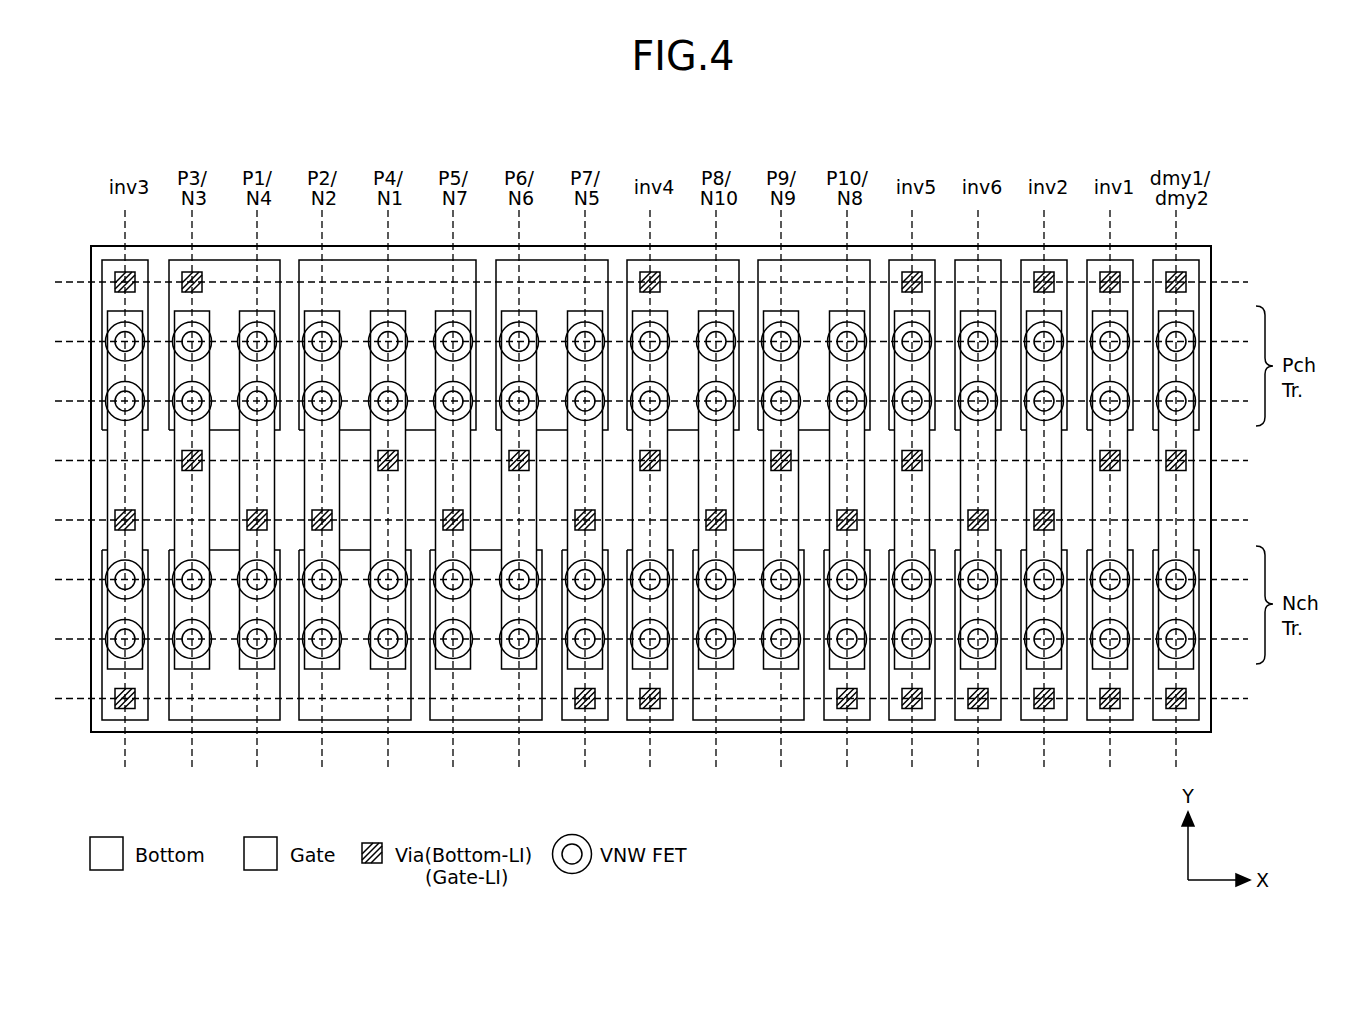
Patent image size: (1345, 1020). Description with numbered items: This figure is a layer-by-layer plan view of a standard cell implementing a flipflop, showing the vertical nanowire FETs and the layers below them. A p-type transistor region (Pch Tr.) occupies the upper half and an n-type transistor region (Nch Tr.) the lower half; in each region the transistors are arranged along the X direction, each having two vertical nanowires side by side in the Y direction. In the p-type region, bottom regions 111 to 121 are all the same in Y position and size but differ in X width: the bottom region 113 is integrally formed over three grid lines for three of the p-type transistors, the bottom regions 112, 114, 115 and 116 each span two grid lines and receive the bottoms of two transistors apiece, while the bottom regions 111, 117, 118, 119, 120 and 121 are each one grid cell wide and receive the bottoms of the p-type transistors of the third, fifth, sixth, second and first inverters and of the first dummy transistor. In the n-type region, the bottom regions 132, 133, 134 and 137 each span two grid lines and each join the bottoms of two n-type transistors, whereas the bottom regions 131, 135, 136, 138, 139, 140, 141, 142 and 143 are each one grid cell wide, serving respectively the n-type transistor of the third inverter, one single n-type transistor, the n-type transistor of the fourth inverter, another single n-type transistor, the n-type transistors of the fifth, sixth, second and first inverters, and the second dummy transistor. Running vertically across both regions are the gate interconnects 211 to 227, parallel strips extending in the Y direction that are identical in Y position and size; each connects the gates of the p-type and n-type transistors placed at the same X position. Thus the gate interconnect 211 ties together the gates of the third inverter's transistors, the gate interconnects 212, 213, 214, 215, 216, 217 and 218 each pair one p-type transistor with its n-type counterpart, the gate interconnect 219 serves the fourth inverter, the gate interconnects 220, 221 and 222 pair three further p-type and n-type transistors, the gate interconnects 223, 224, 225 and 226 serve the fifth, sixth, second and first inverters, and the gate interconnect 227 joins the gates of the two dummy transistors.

The bottom region 111 is at (113, 259).
The bottom region 112 is at (228, 259).
The bottom region 113 is at (360, 259).
The bottom region 114 is at (548, 259).
The bottom region 115 is at (732, 259).
The bottom region 116 is at (863, 259).
The bottom region 117 is at (924, 259).
The bottom region 118 is at (994, 259).
The bottom region 119 is at (1057, 259).
The bottom region 120 is at (1122, 259).
The bottom region 121 is at (1186, 259).
The bottom region 131 is at (118, 722).
The bottom region 132 is at (184, 722).
The bottom region 133 is at (312, 722).
The bottom region 134 is at (439, 722).
The bottom region 135 is at (570, 722).
The bottom region 136 is at (660, 722).
The bottom region 137 is at (791, 722).
The bottom region 138 is at (858, 722).
The bottom region 139 is at (923, 722).
The bottom region 140 is at (988, 722).
The bottom region 141 is at (1056, 722).
The bottom region 142 is at (1121, 722).
The bottom region 143 is at (1185, 722).
The gate interconnect 211 is at (108, 475).
The gate interconnect 212 is at (174, 475).
The gate interconnect 213 is at (240, 475).
The gate interconnect 214 is at (304, 475).
The gate interconnect 215 is at (370, 475).
The gate interconnect 216 is at (436, 475).
The gate interconnect 217 is at (502, 475).
The gate interconnect 218 is at (567, 322).
The gate interconnect 219 is at (668, 478).
The gate interconnect 220 is at (734, 478).
The gate interconnect 221 is at (798, 478).
The gate interconnect 222 is at (864, 478).
The gate interconnect 223 is at (930, 478).
The gate interconnect 224 is at (996, 478).
The gate interconnect 225 is at (1062, 478).
The gate interconnect 226 is at (1128, 478).
The gate interconnect 227 is at (1194, 488).